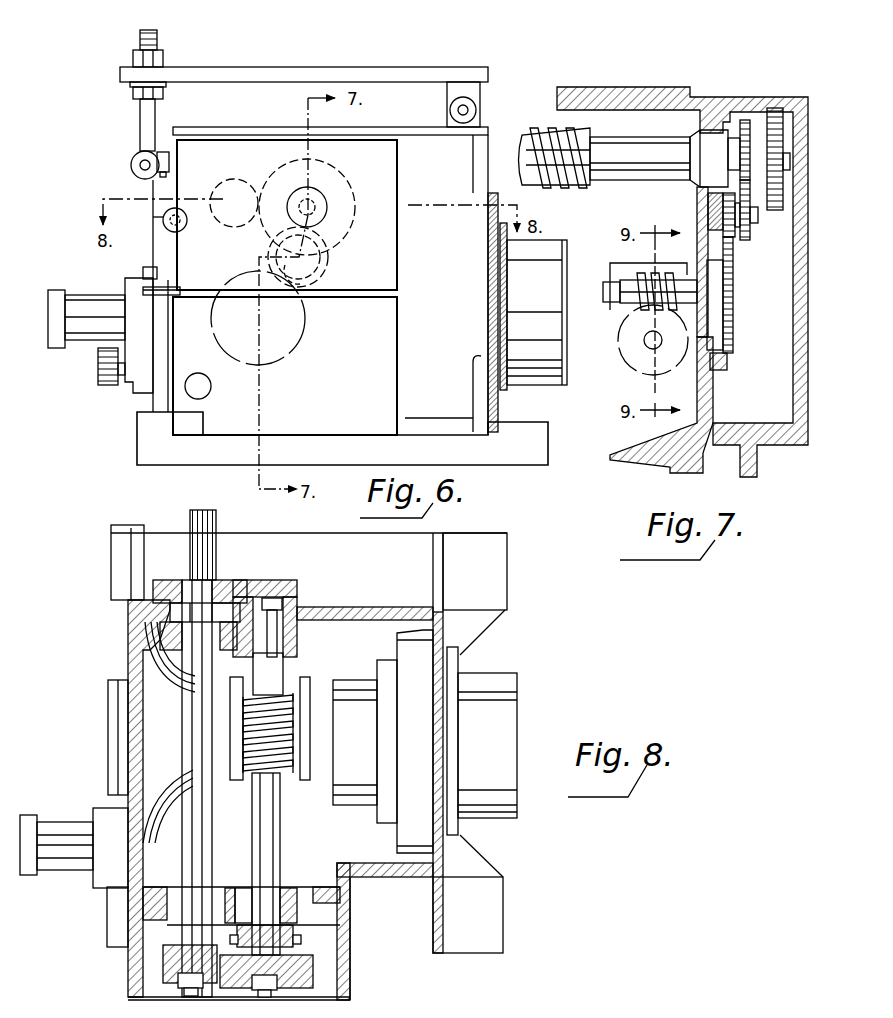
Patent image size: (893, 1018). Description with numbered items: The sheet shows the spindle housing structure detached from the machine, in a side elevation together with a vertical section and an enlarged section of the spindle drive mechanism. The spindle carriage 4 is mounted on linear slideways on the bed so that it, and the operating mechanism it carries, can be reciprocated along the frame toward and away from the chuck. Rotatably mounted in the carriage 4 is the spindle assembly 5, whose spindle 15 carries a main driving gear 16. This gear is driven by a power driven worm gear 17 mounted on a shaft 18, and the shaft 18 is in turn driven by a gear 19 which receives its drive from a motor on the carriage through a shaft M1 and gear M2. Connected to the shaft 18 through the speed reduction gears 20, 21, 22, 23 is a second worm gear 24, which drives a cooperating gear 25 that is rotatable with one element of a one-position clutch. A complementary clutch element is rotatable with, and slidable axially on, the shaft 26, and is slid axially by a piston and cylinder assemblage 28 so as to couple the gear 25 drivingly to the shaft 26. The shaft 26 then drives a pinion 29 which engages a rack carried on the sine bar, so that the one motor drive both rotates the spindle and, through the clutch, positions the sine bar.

In FIG. 6, the spindle carriage 4 is at (342, 296).
In FIG. 7, the spindle carriage 4 is at (628, 87).
In FIG. 8, the spindle carriage 4 is at (447, 635).
In FIG. 6, the spindle assembly 5 is at (530, 388).
In FIG. 8, the spindle assembly 5 is at (520, 682).
In FIG. 6, the spindle 15 is at (537, 312).
In FIG. 8, the spindle 15 is at (510, 710).
In FIG. 8, the main driving gear 16 is at (310, 682).
In FIG. 7, the worm gear 17 is at (530, 125).
In FIG. 8, the worm gear 17 is at (272, 783).
In FIG. 7, the shaft 18 is at (632, 145).
In FIG. 8, the shaft 18 is at (283, 850).
In FIG. 6, the gear 19 is at (345, 185).
In FIG. 7, the gear 19 is at (778, 108).
In FIG. 8, the gear 19 is at (313, 978).
In FIG. 6, the speed reduction gear 20 is at (327, 207).
In FIG. 7, the speed reduction gear 20 is at (745, 120).
In FIG. 8, the speed reduction gear 20 is at (293, 940).
In FIG. 6, the speed reduction gear 21 is at (328, 258).
In FIG. 7, the speed reduction gear 21 is at (745, 240).
In FIG. 6, the speed reduction gear 22 is at (302, 284).
In FIG. 7, the speed reduction gear 22 is at (708, 207).
In FIG. 6, the speed reduction gear 23 is at (305, 343).
In FIG. 7, the speed reduction gear 23 is at (728, 353).
In FIG. 7, the worm gear 24 is at (640, 310).
In FIG. 7, the cooperating gear 25 is at (630, 365).
In FIG. 7, the shaft 26 is at (644, 342).
In FIG. 6, the piston and cylinder assemblage 28 is at (88, 340).
In FIG. 8, the piston and cylinder assemblage 28 is at (70, 822).
In FIG. 6, the pinion 29 is at (107, 386).
In FIG. 8, the shaft M1 is at (190, 688).
In FIG. 8, the gear M2 is at (163, 972).